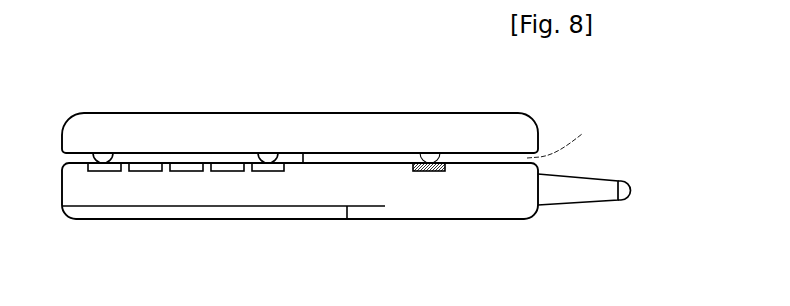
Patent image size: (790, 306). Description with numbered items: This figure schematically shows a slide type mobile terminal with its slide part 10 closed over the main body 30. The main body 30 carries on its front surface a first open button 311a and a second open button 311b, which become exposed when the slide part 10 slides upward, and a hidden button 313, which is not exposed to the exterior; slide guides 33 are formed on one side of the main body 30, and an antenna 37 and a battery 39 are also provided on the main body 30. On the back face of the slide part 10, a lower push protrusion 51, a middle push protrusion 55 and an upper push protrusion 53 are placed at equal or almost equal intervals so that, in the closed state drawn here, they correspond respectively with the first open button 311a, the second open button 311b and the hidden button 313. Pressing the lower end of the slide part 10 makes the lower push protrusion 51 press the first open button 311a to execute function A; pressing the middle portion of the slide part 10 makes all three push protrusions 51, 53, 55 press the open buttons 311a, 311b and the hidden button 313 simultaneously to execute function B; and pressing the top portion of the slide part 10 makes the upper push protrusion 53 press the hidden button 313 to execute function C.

The slide part 10 is at (413, 125).
The main body 30 is at (475, 197).
The slide guides 33 is at (568, 139).
The antenna 37 is at (567, 193).
The battery 39 is at (198, 206).
The lower push protrusion 51 is at (100, 153).
The upper push protrusion 53 is at (430, 153).
The middle push protrusion 55 is at (268, 153).
The first open button 311a is at (104, 164).
The second open button 311b is at (270, 172).
The hidden button 313 is at (430, 172).